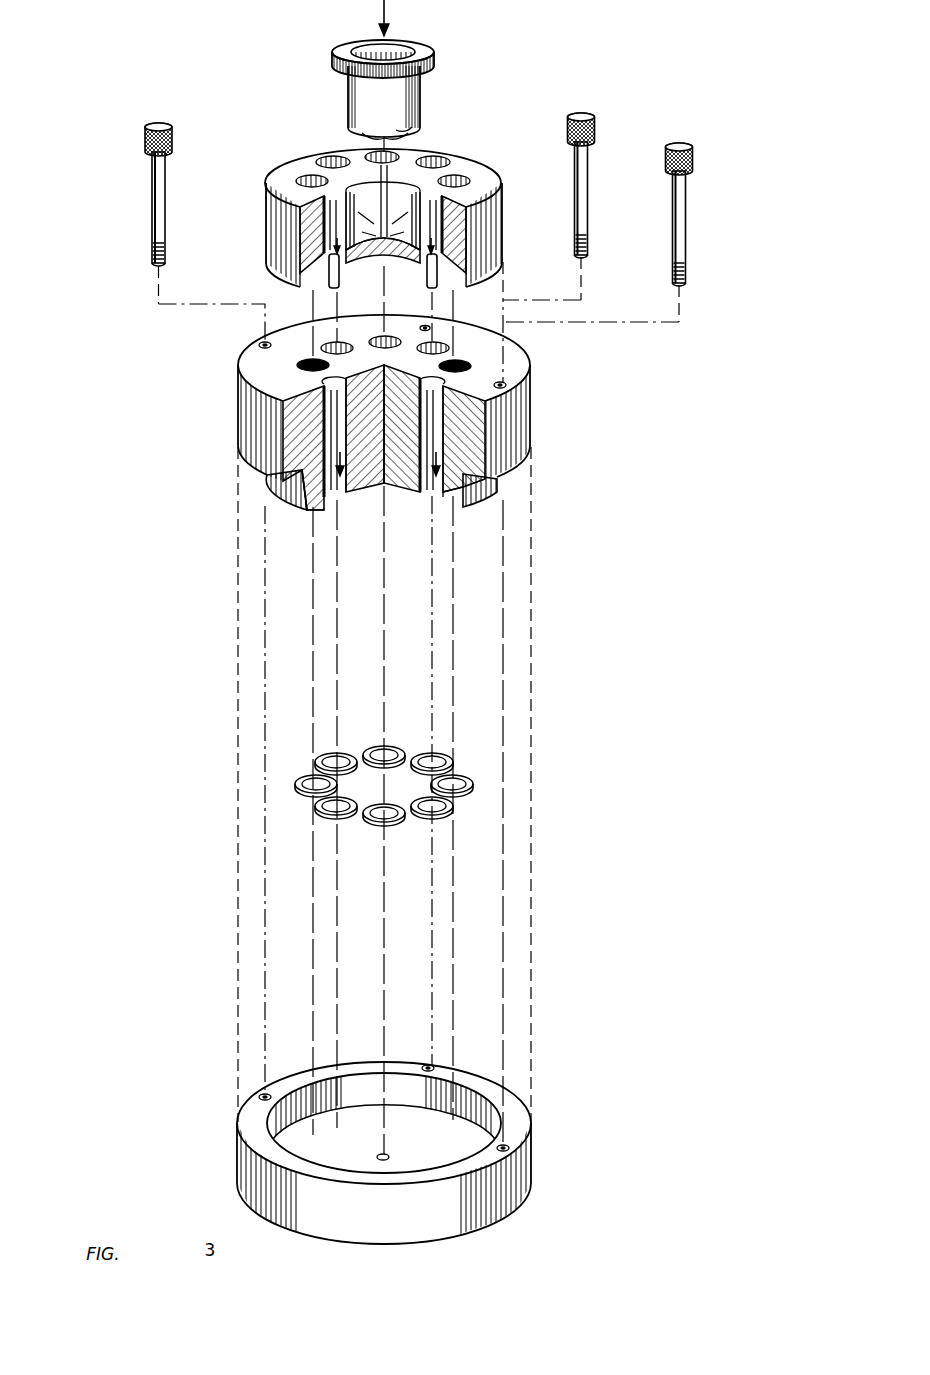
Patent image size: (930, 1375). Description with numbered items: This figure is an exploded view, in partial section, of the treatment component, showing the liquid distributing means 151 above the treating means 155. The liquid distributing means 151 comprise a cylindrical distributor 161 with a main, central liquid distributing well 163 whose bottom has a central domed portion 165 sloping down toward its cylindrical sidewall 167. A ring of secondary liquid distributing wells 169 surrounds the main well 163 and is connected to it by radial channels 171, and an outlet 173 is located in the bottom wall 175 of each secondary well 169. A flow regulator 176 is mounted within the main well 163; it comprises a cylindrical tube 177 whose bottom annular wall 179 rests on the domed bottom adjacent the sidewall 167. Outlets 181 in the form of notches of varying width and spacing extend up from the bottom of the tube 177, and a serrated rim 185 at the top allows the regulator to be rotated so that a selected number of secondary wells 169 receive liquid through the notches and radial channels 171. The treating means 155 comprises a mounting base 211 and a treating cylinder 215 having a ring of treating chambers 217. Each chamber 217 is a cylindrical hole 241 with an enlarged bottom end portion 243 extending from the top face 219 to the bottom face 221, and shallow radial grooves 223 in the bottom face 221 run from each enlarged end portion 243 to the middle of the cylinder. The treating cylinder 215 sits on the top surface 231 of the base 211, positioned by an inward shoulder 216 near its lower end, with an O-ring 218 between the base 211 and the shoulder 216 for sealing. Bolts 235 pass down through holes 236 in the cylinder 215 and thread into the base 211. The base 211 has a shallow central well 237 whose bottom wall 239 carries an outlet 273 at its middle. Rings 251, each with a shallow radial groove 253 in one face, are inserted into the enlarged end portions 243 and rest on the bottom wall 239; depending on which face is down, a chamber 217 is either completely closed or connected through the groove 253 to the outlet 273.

The liquid distributing means 151 is at (497, 166).
The treating means 155 is at (222, 402).
The cylindrical distributor 161 is at (284, 176).
The main central liquid distributing well 163 is at (370, 178).
The central domed portion 165 is at (383, 258).
The cylindrical sidewall 167 is at (392, 160).
The secondary liquid distributing wells 169 is at (298, 181).
The radial channels 171 is at (330, 160).
The outlet 173 is at (440, 272).
The bottom wall 175 is at (436, 44).
The flow regulator 176 is at (312, 242).
The cylindrical tube 177 is at (349, 86).
The bottom annular wall 179 is at (408, 136).
The outlets 181 is at (420, 110).
The serrated rim 185 is at (355, 42).
The mounting base 211 is at (534, 1168).
The treating cylinder 215 is at (531, 412).
The shoulder 216 is at (270, 480).
The treating chambers 217 is at (300, 364).
The O-ring 218 is at (466, 477).
The top face 219 is at (282, 375).
The bottom face 221 is at (460, 506).
The shallow radial grooves 223 is at (385, 492).
The top surface 231 is at (518, 1108).
The bolts 235 is at (153, 202).
The holes 236 is at (260, 344).
The shallow central well 237 is at (455, 1125).
The bottom wall 239 is at (450, 1150).
The cylindrical hole 241 is at (322, 446).
The enlarged bottom end portion 243 is at (318, 503).
The rings 251 is at (453, 758).
The shallow radial groove 253 is at (418, 770).
The outlet 273 is at (388, 1154).